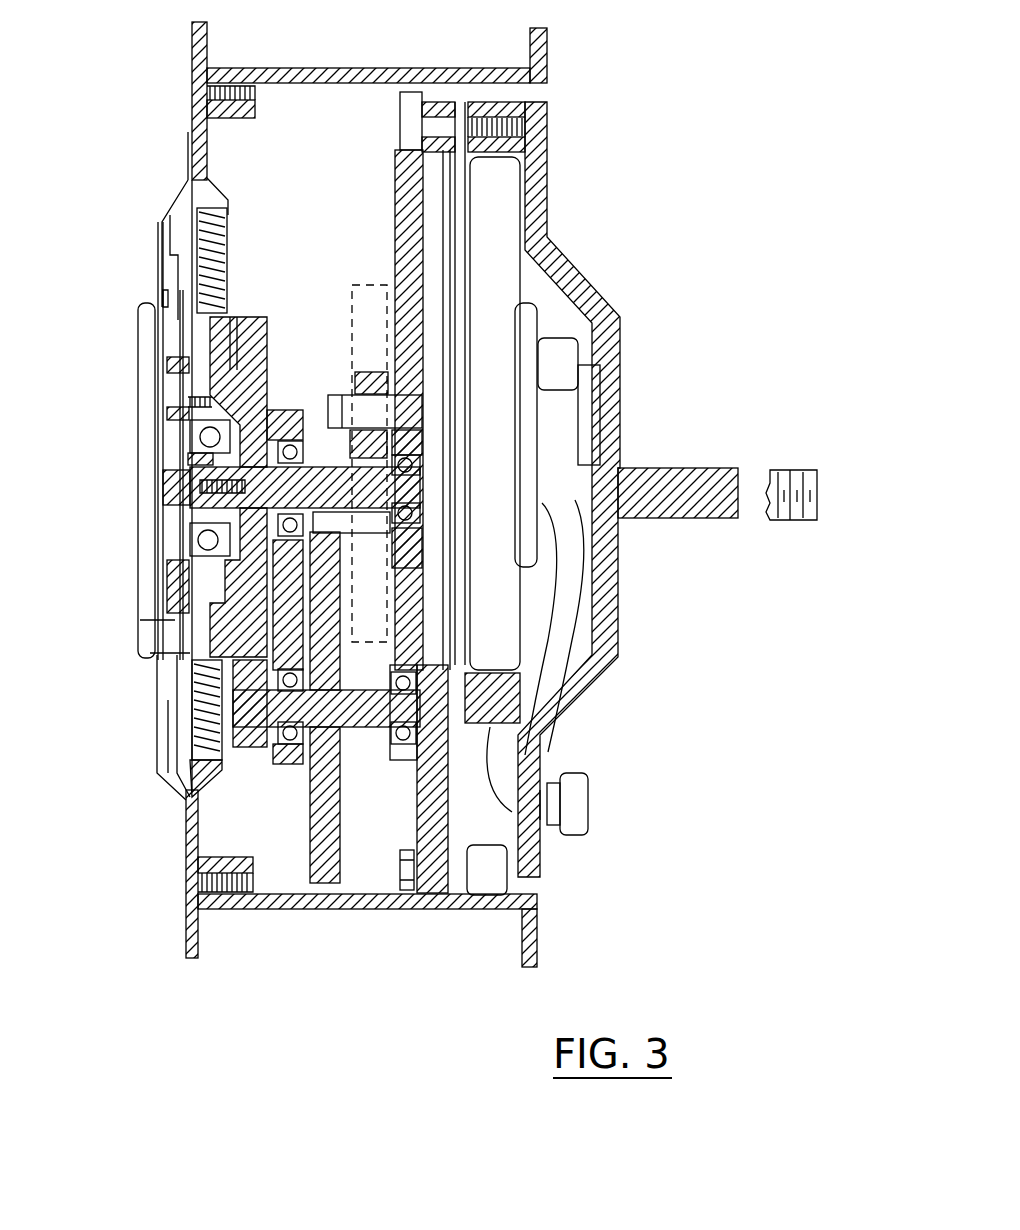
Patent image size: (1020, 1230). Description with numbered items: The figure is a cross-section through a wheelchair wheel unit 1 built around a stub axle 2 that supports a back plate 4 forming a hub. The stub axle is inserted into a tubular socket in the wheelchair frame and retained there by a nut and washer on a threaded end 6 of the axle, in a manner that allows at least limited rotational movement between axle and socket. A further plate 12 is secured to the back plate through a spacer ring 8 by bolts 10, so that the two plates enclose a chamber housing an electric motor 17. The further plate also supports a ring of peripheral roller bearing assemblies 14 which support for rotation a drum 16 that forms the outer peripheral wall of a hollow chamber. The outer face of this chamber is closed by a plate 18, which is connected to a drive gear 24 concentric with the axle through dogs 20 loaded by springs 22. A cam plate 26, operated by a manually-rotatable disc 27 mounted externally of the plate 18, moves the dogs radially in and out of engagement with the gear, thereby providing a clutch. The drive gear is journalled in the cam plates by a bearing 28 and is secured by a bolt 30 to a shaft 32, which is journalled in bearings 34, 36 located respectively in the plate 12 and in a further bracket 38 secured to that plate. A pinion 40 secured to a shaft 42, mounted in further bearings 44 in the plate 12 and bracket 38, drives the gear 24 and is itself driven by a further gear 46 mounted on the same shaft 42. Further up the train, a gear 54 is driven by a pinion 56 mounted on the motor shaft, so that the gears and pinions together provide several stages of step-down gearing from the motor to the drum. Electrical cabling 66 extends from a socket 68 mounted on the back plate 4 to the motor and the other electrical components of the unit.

The wheel unit 1 is at (632, 80).
The stub axle 2 is at (685, 468).
The back plate 4 is at (547, 232).
The threaded end 6 is at (793, 470).
The spacer ring 8 is at (495, 102).
The bolts 10 is at (398, 120).
The further plate 12 is at (397, 195).
The peripheral roller bearing assemblies 14 is at (487, 896).
The drum 16 is at (292, 68).
The electric motor 17 is at (500, 290).
The plate 18 is at (192, 58).
The dogs 20 is at (200, 322).
The springs 22 is at (200, 240).
The drive gear 24 is at (268, 345).
The cam plate 26 is at (185, 370).
The manually-rotatable disc 27 is at (140, 440).
The bearing 28 is at (200, 440).
The bolt 30 is at (180, 490).
The shaft 32 is at (330, 468).
The bearing 34 is at (417, 463).
The bearing 36 is at (300, 523).
The bracket 38 is at (292, 765).
The pinion 40 is at (182, 797).
The shaft 42 is at (368, 740).
The bearings 44 is at (270, 762).
The further gear 46 is at (327, 884).
The gear 54 is at (371, 372).
The pinion 56 is at (373, 372).
The electrical cabling 66 is at (555, 620).
The socket 68 is at (578, 813).